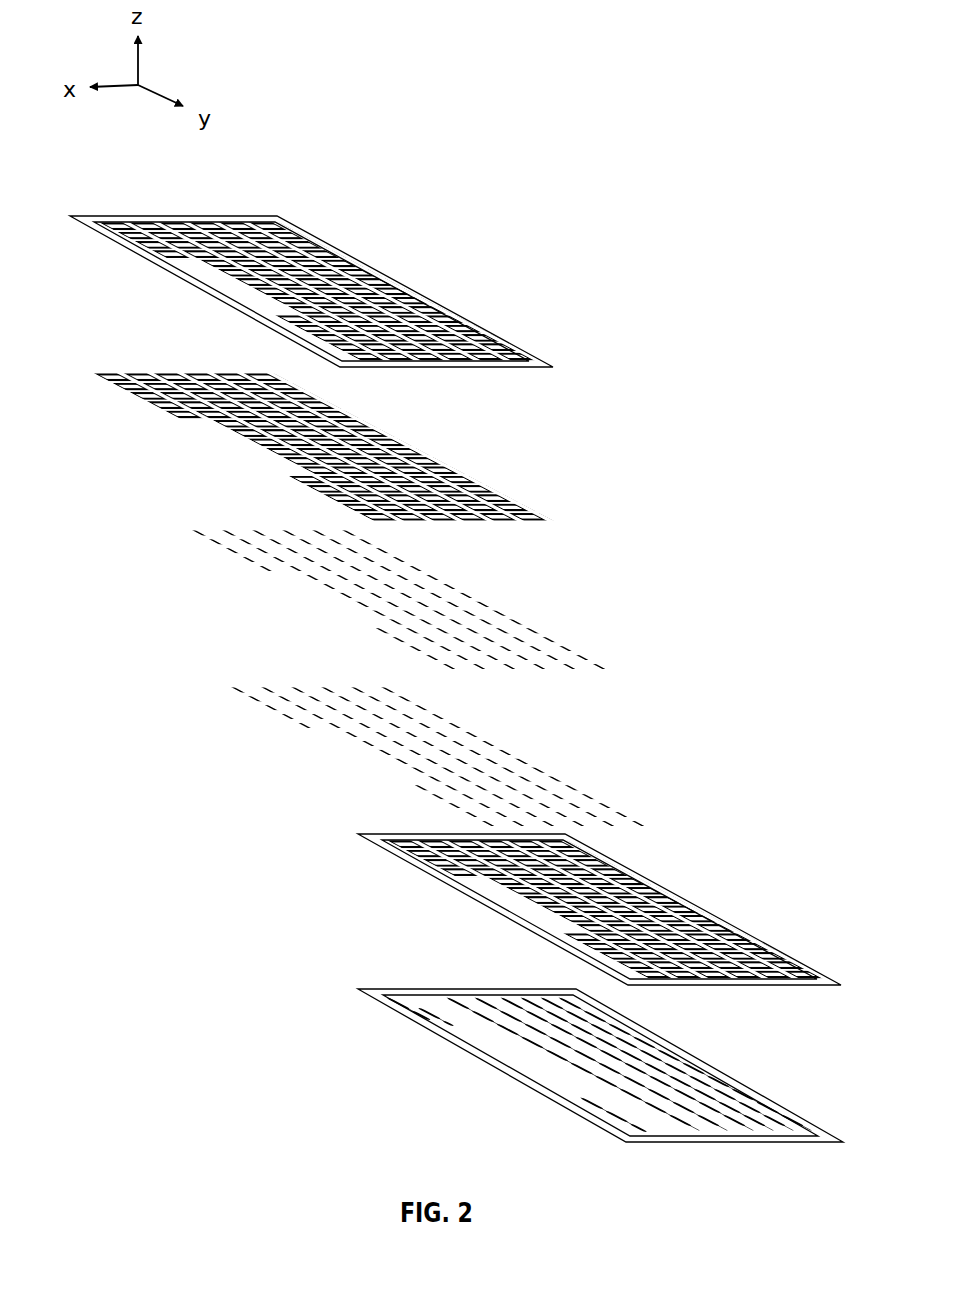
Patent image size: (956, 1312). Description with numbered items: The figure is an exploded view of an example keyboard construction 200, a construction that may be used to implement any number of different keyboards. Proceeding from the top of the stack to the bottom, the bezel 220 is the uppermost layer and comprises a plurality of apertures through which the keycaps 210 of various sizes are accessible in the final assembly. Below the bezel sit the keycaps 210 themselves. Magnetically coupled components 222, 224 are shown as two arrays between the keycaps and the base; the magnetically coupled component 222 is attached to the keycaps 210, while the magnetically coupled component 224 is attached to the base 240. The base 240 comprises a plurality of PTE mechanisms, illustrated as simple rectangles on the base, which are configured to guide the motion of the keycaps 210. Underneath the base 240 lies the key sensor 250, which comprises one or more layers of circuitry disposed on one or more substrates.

The keyboard construction 200 is at (661, 182).
The keycaps 210 is at (124, 354).
The bezel 220 is at (104, 199).
The magnetically coupled component 222 is at (211, 521).
The magnetically coupled component 224 is at (247, 672).
The base 240 is at (379, 817).
The key sensor 250 is at (388, 967).